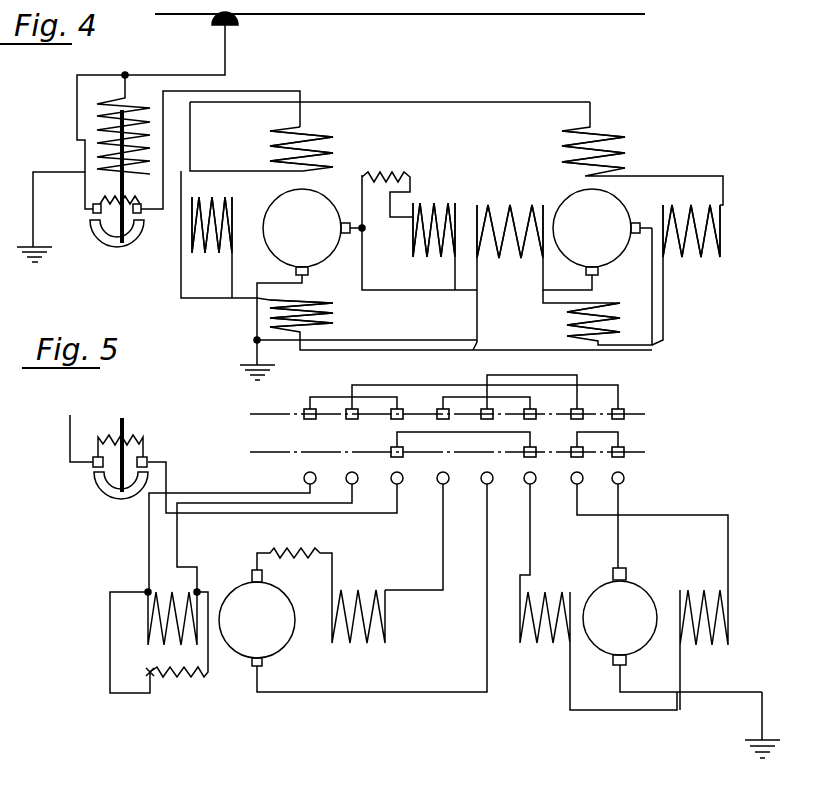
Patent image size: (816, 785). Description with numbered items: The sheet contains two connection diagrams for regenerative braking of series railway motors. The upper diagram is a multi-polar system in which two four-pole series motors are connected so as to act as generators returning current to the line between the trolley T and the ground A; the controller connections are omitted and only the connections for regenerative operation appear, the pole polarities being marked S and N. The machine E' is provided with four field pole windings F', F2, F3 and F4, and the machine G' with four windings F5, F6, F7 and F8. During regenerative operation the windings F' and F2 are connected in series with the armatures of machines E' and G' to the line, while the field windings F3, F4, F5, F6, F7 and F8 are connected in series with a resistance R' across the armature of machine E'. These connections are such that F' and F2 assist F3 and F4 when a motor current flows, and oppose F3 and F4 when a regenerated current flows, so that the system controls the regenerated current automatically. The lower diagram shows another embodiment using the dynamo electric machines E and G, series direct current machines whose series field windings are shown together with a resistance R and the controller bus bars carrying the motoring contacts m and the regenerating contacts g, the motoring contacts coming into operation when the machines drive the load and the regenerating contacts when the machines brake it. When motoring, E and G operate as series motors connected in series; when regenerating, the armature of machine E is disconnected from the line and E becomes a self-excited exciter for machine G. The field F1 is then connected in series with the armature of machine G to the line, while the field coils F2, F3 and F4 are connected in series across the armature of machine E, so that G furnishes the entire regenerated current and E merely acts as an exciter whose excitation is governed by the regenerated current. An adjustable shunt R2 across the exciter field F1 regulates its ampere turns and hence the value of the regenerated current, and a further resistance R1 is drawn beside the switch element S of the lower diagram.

In FIG. 4, the trolley terminal T is at (498, 17).
In FIG. 4, the south pole marking S is at (434, 234).
In FIG. 5, the south pole marking S is at (118, 499).
In FIG. 4, the north pole marking N is at (456, 216).
In FIG. 4, the field pole winding F' is at (269, 136).
In FIG. 4, the field winding F2 is at (416, 260).
In FIG. 5, the field winding F2 is at (358, 604).
In FIG. 4, the field winding F3 is at (212, 247).
In FIG. 5, the field winding F3 is at (598, 640).
In FIG. 4, the field winding F4 is at (434, 246).
In FIG. 5, the field winding F4 is at (704, 638).
In FIG. 4, the field pole winding F5 is at (642, 153).
In FIG. 4, the field pole winding F6 is at (597, 286).
In FIG. 4, the field pole winding F7 is at (532, 277).
In FIG. 4, the field pole winding F8 is at (686, 275).
In FIG. 4, the resistance R' is at (387, 182).
In FIG. 4, the four-pole series motor E' is at (358, 277).
In FIG. 4, the four-pole series motor G' is at (602, 232).
In FIG. 5, the regenerating contacts g is at (457, 401).
In FIG. 5, the motoring contacts m is at (458, 448).
In FIG. 5, the resistance R is at (297, 558).
In FIG. 5, the resistance R1 is at (135, 432).
In FIG. 5, the adjustable shunt R2 is at (178, 678).
In FIG. 5, the series field winding F1 is at (160, 592).
In FIG. 5, the dynamo electric machine E is at (257, 618).
In FIG. 5, the dynamo electric machine G is at (672, 630).
In FIG. 5, the ground terminal A is at (762, 737).